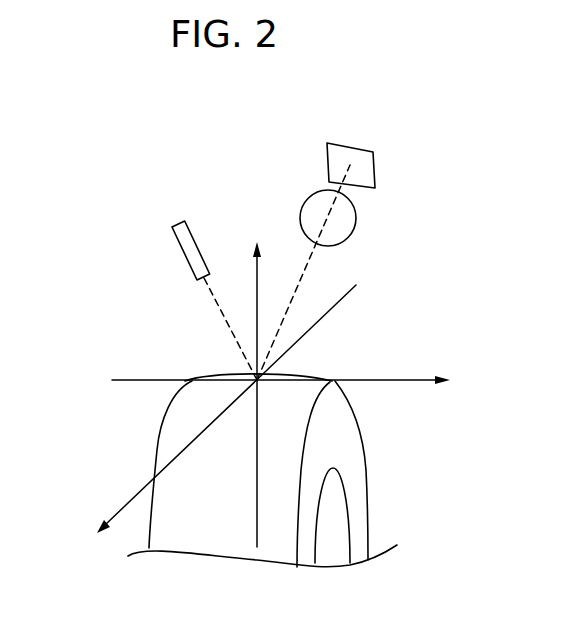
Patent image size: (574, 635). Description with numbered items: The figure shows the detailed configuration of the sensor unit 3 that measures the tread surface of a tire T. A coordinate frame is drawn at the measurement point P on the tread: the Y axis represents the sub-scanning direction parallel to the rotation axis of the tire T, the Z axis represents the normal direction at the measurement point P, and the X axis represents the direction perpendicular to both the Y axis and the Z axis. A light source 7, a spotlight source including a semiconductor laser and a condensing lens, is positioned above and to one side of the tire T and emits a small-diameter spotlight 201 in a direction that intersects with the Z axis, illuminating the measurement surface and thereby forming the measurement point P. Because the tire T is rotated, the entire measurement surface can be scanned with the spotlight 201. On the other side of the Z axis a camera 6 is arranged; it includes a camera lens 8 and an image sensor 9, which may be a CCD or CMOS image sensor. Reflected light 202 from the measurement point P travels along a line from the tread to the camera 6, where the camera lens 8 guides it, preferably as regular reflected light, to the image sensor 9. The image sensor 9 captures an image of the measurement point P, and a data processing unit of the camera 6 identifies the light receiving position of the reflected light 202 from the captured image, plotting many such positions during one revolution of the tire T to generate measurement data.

The sensor unit 3 is at (212, 86).
The camera 6 is at (303, 178).
The light source 7 is at (175, 218).
The camera lens 8 is at (348, 218).
The image sensor 9 is at (370, 150).
The spotlight 201 is at (219, 309).
The reflected light 202 is at (305, 278).
The measurement point P is at (270, 376).
The tire T is at (352, 467).
The X axis X is at (215, 420).
The Y axis Y is at (290, 380).
The Z axis Z is at (256, 380).